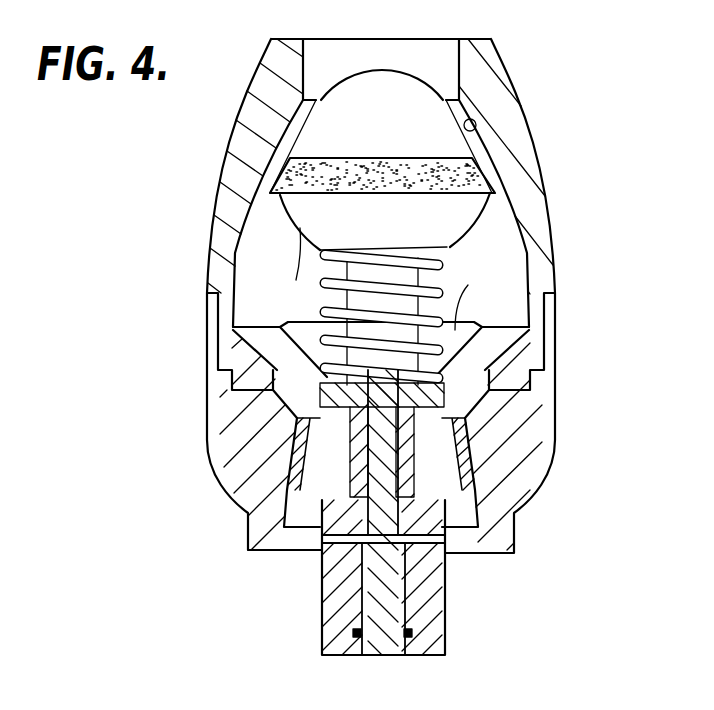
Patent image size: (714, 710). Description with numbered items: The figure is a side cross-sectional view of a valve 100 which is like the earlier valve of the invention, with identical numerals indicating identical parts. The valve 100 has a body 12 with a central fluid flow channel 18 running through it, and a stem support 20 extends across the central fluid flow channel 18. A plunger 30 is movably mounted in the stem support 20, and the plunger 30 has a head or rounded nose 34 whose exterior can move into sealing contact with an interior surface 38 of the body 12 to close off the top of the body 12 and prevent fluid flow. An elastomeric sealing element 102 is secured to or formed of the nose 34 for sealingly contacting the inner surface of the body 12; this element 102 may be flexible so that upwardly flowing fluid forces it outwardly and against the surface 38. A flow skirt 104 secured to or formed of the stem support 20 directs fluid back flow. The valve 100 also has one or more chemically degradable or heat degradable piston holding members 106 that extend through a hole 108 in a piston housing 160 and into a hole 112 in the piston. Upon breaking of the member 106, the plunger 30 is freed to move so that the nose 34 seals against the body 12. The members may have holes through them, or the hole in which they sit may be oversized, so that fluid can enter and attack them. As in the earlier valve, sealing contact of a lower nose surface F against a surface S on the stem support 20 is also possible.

The valve 100 is at (223, 159).
The elastomeric sealing element 102 is at (262, 188).
The central fluid flow channel 18 is at (237, 250).
The body 12 is at (525, 163).
The nose 34 is at (433, 106).
The interior surface 38 is at (468, 130).
The plunger 30 is at (455, 246).
The stem support 20 is at (503, 345).
The flow skirt 104 is at (473, 474).
The hole 112 is at (485, 538).
The piston holding member 106 is at (310, 551).
The hole 108 is at (430, 530).
The piston housing 160 is at (437, 627).